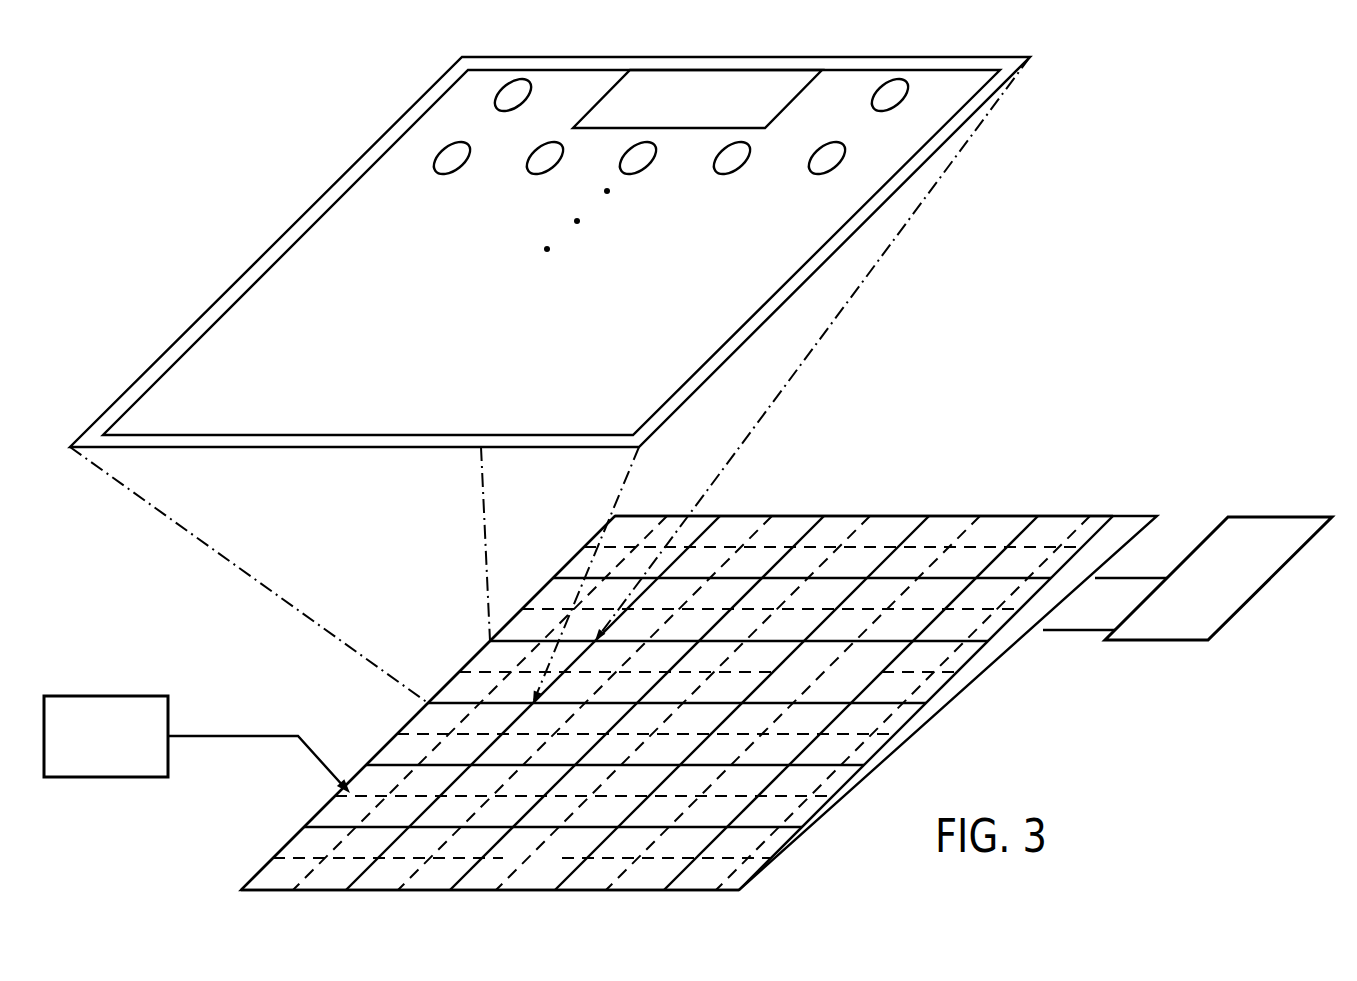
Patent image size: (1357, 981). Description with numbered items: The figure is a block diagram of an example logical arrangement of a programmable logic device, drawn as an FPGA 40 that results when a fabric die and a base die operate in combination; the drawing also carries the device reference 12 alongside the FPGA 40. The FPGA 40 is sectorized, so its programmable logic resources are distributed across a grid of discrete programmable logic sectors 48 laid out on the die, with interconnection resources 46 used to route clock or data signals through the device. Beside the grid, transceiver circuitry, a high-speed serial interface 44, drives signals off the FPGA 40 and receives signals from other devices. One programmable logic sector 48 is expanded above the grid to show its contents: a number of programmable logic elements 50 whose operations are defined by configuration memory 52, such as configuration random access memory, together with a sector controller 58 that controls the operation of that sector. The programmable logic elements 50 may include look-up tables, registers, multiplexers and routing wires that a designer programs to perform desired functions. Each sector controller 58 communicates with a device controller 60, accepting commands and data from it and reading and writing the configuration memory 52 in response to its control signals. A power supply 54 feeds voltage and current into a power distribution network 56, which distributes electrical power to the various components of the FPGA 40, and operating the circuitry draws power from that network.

The integrated circuit device 12 is at (703, 474).
The FPGA 40 is at (898, 468).
The transceiver circuitry (high-speed serial interface, HSSI) 44 is at (1250, 600).
The interconnection resources 46 is at (267, 250).
The programmable logic sector 48 is at (352, 80).
The programmable logic element 50 is at (727, 137).
The configuration memory 52 is at (522, 78).
The power supply 54 is at (105, 696).
The power distribution network 56 is at (318, 846).
The sector controller 58 is at (724, 70).
The device controller 60 is at (512, 891).